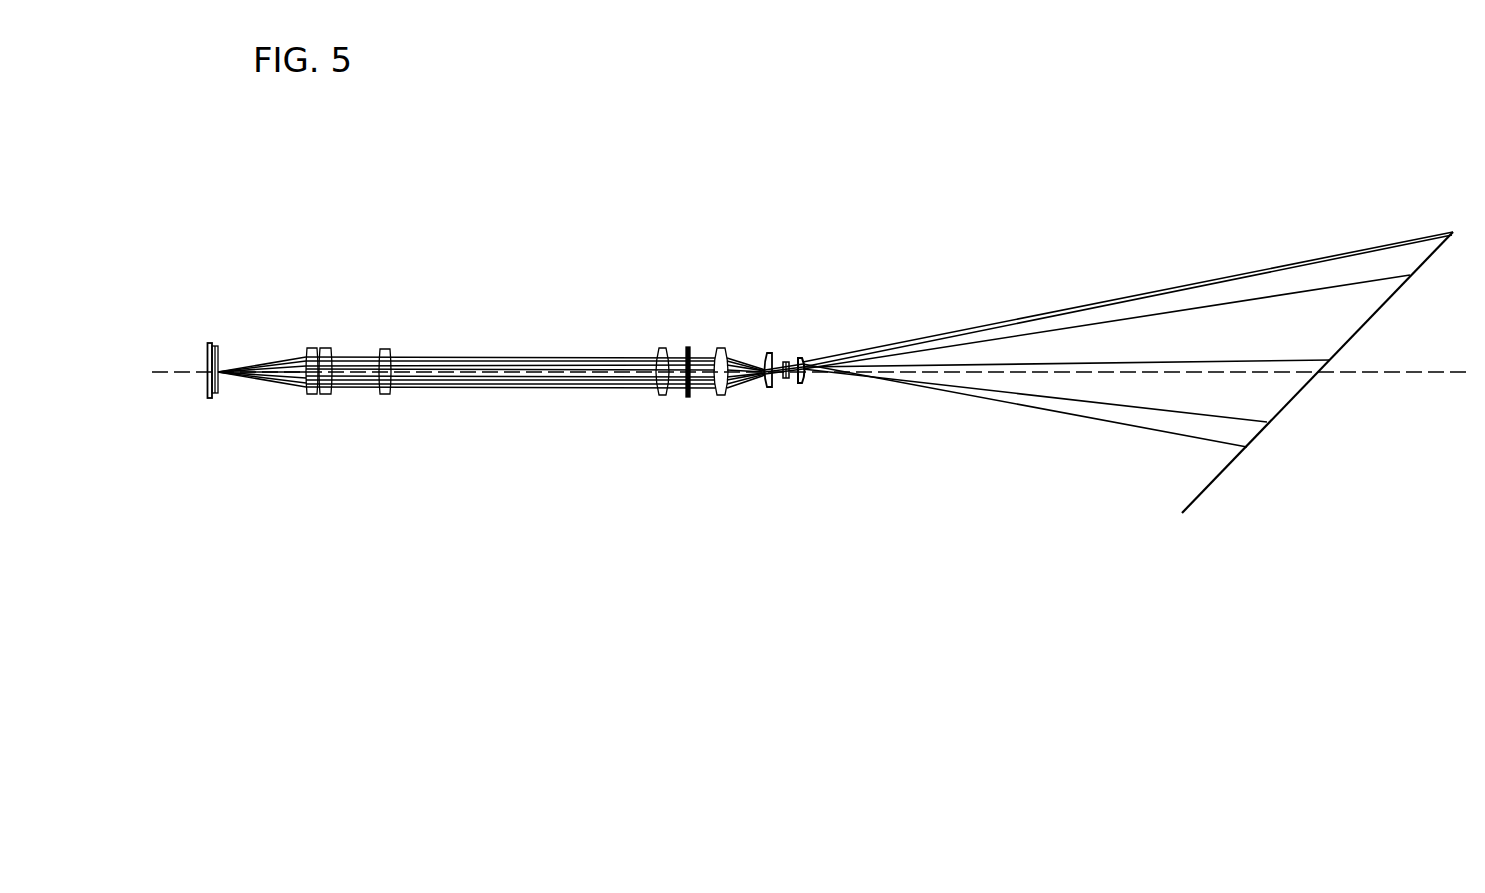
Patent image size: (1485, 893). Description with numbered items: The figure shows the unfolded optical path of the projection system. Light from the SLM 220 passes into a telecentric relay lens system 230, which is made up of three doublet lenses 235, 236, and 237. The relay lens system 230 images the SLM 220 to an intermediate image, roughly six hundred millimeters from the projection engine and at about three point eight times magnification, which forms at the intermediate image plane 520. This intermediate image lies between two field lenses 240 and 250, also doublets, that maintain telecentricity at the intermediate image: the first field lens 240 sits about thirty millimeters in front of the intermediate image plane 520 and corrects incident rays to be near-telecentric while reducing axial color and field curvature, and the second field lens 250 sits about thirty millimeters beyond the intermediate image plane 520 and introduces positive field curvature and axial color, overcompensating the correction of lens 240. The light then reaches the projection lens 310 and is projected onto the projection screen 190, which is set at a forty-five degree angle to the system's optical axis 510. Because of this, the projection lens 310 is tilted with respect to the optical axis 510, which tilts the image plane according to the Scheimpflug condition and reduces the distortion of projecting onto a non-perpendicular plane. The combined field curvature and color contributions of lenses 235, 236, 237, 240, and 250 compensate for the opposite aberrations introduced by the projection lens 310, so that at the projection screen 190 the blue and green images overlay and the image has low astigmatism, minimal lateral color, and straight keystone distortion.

The projection screen 190 is at (1230, 463).
The SLM 220 is at (198, 388).
The telecentric relay lens system 230 is at (365, 303).
The doublet lens 235 is at (310, 347).
The doublet lens 236 is at (324, 347).
The doublet lens 237 is at (417, 335).
The field lens 240 is at (660, 348).
The field lens 250 is at (720, 348).
The projection lens 310 is at (760, 392).
The optical axis 510 is at (1415, 377).
The intermediate image plane 520 is at (688, 347).